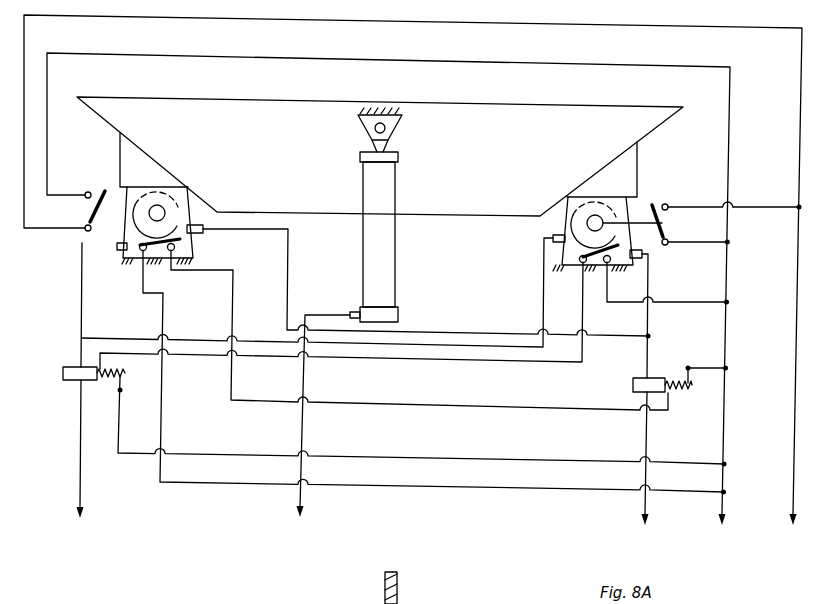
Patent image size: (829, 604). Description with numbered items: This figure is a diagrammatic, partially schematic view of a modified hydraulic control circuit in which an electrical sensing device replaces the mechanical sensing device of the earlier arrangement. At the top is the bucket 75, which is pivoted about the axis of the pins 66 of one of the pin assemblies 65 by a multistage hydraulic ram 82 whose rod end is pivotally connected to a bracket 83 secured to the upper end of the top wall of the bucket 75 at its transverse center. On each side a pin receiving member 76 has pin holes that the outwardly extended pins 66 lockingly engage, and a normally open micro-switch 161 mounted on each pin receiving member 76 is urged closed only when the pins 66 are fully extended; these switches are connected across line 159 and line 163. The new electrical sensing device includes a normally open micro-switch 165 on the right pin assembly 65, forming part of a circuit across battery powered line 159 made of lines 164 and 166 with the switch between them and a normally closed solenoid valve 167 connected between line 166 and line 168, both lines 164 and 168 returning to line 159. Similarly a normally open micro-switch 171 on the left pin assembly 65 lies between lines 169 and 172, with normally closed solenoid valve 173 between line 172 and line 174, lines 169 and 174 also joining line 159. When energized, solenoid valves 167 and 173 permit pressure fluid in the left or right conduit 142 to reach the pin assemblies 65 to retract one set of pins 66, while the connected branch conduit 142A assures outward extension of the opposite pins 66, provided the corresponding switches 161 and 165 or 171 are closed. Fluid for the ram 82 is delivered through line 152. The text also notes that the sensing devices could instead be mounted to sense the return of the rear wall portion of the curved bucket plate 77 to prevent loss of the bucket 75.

The bucket 75 is at (295, 100).
The pin receiving member 76 is at (120, 155).
The pins 66 is at (163, 207).
The pin assembly 65 is at (196, 244).
The multistage hydraulic ram 82 is at (390, 252).
The bracket 83 is at (402, 128).
The micro-switch 161 is at (149, 213).
The conduit 142 is at (82, 310).
The branch conduit 142A is at (443, 330).
The line 152 is at (300, 433).
The line 159 is at (726, 415).
The line 163 is at (793, 445).
The line 164 is at (690, 302).
The micro-switch 165 is at (587, 263).
The line 166 is at (445, 363).
The solenoid valve 167 is at (72, 382).
The line 168 is at (415, 458).
The line 169 is at (538, 490).
The micro-switch 171 is at (153, 261).
The line 172 is at (233, 285).
The solenoid valve 173 is at (633, 384).
The line 174 is at (705, 370).
The curved bucket plate 77 is at (421, 603).